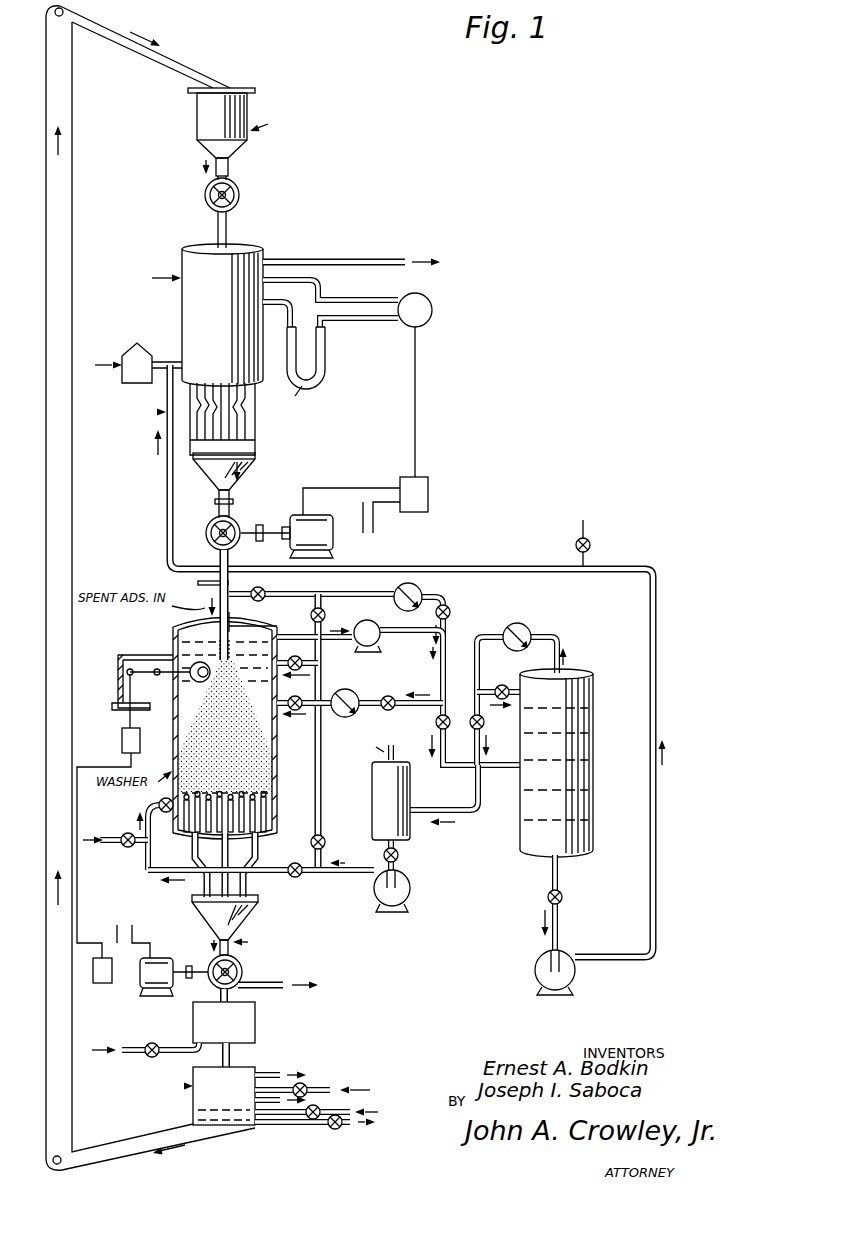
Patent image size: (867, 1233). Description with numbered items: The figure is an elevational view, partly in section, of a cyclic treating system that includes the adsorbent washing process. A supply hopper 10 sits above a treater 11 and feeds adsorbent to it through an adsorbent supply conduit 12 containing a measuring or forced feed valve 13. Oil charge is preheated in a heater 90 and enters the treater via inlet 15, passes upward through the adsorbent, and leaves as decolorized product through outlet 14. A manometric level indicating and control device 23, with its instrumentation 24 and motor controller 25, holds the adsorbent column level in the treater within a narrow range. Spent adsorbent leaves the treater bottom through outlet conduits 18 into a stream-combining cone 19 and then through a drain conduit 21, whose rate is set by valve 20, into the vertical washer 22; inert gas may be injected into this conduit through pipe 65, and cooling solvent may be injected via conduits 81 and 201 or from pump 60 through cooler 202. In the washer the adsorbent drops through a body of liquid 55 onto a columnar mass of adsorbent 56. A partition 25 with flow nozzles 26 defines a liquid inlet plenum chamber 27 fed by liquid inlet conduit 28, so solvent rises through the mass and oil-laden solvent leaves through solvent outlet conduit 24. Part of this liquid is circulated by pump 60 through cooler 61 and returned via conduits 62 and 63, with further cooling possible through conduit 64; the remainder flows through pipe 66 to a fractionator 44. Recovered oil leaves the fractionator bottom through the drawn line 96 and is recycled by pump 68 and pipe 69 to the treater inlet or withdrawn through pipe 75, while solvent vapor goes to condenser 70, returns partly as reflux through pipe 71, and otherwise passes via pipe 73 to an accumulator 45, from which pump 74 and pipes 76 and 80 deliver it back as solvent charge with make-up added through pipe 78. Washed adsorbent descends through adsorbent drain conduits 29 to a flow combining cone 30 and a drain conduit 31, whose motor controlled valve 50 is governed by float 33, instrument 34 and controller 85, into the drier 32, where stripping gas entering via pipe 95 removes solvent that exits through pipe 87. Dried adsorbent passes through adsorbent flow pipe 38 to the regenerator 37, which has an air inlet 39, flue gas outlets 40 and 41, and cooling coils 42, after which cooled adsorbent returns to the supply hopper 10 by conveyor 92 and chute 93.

The supply hopper 10 is at (197, 115).
The treater 11 is at (182, 252).
The adsorbent supply conduit 12 is at (230, 166).
The measuring or forced feed valve 13 is at (240, 195).
The treated oil outlet 14 is at (334, 262).
The oil feed inlet 15 is at (172, 368).
The outlet conduits 18 is at (252, 435).
The stream-combining cone 19 is at (243, 468).
The flow measuring or regulating valve 20 is at (208, 533).
The drain conduit 21 is at (219, 496).
The vertical washer 22 is at (140, 656).
The manometric level indicating and control device 23 is at (322, 355).
The instrumentation / solvent outlet conduit 24 is at (432, 318).
The motor controller / partition 25 is at (428, 496).
The flow nozzles 26 is at (265, 780).
The liquid inlet plenum chamber 27 is at (195, 842).
The liquid inlet conduit 28 is at (152, 803).
The adsorbent drain conduits 29 is at (222, 848).
The flow combining cone 30 is at (242, 914).
The drain conduit 31 is at (240, 958).
The drier 32 is at (255, 1025).
The level measuring float 33 is at (196, 680).
The instrument 34 is at (122, 740).
The regenerator 37 is at (193, 1100).
The adsorbent flow pipe 38 is at (232, 1058).
The air inlet 39 is at (322, 1087).
The flue gas outlet 40 is at (272, 1072).
The flue gas outlet 41 is at (276, 1120).
The cooling coils 42 is at (306, 1126).
The fractionator 44 is at (590, 690).
The accumulator 45 is at (377, 804).
The motor controlled flow regulating valve 50 is at (242, 982).
The body of liquid 55 is at (176, 626).
The columnar mass of adsorbent 56 is at (186, 741).
The pump 60 is at (381, 636).
The cooler 61 is at (352, 690).
The conduit 62 is at (345, 712).
The conduit 63 is at (318, 683).
The conduit 64 is at (312, 714).
The pipe 65 is at (205, 580).
The pipe 66 is at (436, 745).
The pump 68 is at (535, 978).
The pipe 69 is at (166, 504).
The condenser 70 is at (518, 621).
The pipe 71 is at (512, 684).
The pipe 73 is at (478, 794).
The pump 74 is at (410, 886).
The pipe 75 is at (590, 546).
The pipe 76 is at (322, 874).
The pipe 78 is at (122, 832).
The pipe 80 is at (150, 872).
The conduit 81 is at (322, 803).
The controller 85 is at (100, 983).
The pipe 87 is at (272, 990).
The heater 90 is at (127, 358).
The conveyor 92 is at (46, 98).
The chute 93 is at (185, 62).
The pipe 95 is at (142, 1048).
The line 96 is at (558, 876).
The conduit 201 is at (326, 598).
The cooler 202 is at (408, 582).